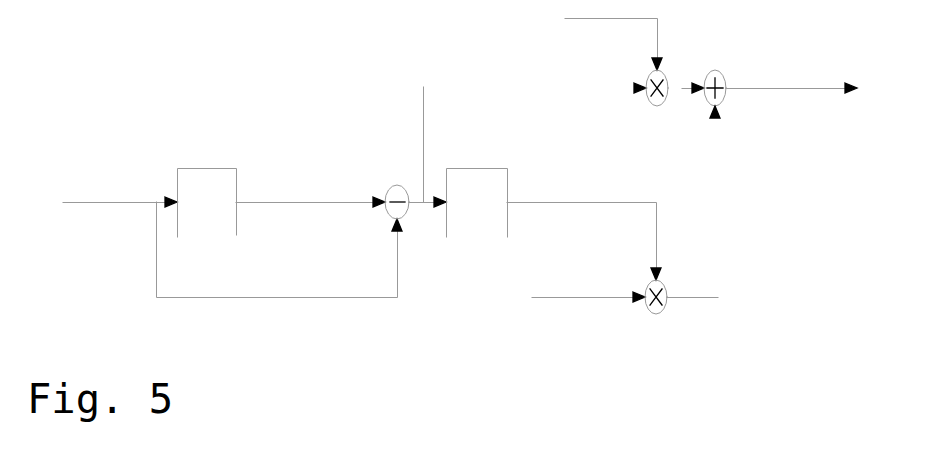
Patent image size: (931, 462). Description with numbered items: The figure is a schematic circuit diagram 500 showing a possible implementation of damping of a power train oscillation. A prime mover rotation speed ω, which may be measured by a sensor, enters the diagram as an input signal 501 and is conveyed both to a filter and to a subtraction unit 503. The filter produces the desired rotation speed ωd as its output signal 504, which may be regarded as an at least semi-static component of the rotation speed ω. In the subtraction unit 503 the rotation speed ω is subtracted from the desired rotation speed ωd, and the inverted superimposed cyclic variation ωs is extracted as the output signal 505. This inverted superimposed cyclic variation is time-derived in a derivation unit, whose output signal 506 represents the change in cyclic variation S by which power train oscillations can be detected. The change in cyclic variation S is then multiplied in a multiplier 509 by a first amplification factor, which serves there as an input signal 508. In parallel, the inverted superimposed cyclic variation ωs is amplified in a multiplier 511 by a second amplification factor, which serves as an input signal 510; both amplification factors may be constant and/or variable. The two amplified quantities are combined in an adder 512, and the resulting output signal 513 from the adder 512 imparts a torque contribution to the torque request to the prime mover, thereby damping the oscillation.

The schematic circuit diagram 500 is at (208, 94).
The input signal 501 is at (120, 187).
The subtraction unit 503 is at (397, 176).
The output signal 504 is at (310, 184).
The output signal 505 is at (446, 123).
The output signal 506 is at (584, 214).
The input signal 508 is at (588, 277).
The multiplier 509 is at (681, 277).
The input signal 510 is at (613, 44).
The multiplier 511 is at (654, 111).
The adder 512 is at (708, 72).
The output signal 513 is at (791, 66).